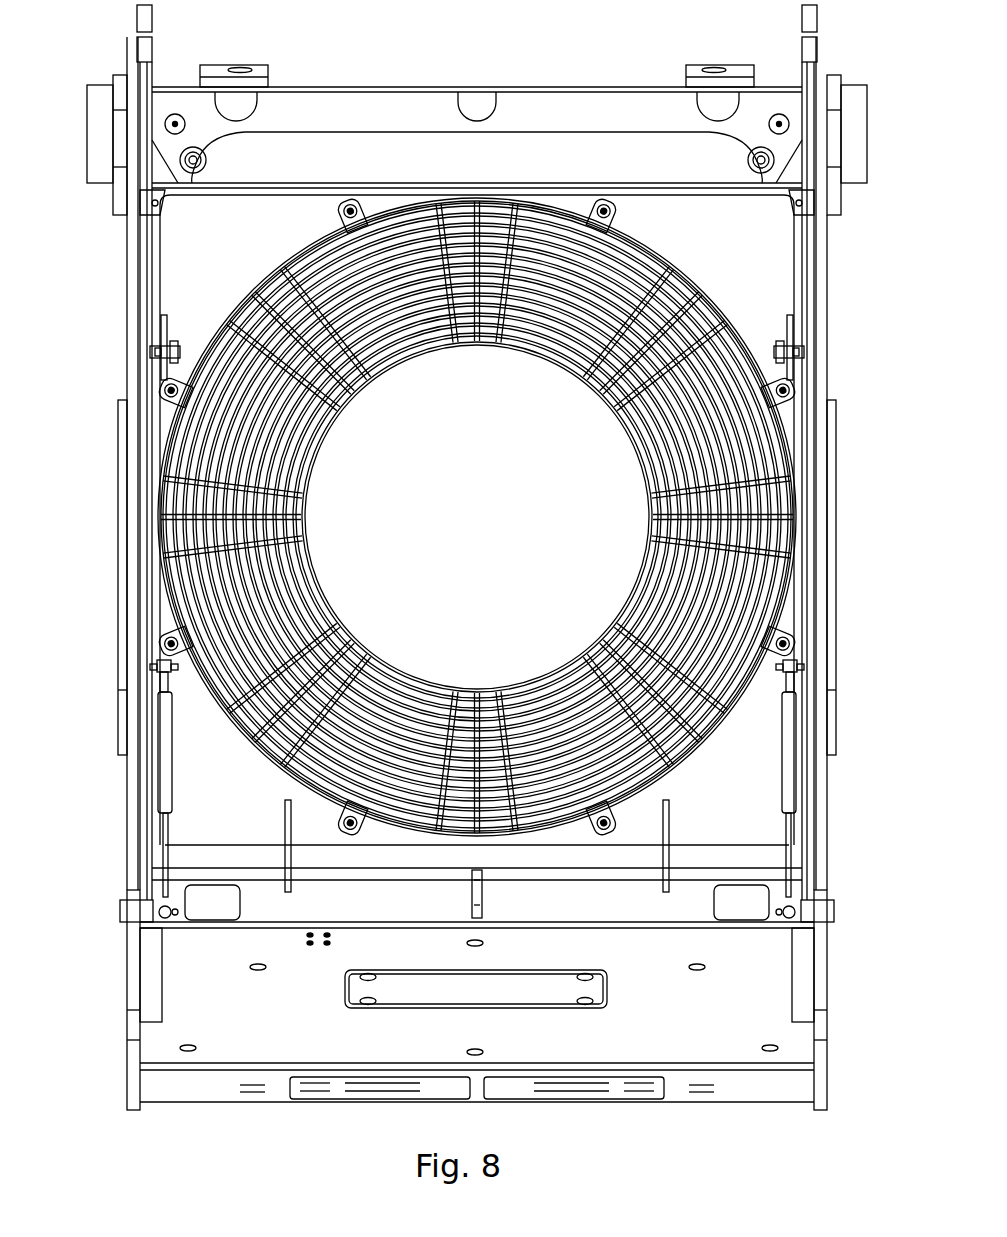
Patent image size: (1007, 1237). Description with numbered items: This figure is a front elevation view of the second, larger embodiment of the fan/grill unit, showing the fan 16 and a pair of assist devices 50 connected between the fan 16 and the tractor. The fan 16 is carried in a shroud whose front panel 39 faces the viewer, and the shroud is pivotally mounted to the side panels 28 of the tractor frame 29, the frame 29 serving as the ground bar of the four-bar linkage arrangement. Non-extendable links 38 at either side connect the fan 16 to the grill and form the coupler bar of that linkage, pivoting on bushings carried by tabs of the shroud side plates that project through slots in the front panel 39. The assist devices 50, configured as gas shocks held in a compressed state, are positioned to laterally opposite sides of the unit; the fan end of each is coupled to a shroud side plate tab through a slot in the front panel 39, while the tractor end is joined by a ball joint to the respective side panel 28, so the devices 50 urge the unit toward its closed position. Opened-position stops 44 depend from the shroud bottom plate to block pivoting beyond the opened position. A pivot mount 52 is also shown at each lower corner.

The fan 16 is at (836, 256).
The side panel 28 is at (128, 800).
The frame 29 is at (106, 718).
The link 38 is at (160, 328).
The front panel 39 is at (685, 232).
The opened-position stop 44 is at (292, 830).
The assist device 50 is at (172, 760).
The pivot mount 52 is at (145, 912).